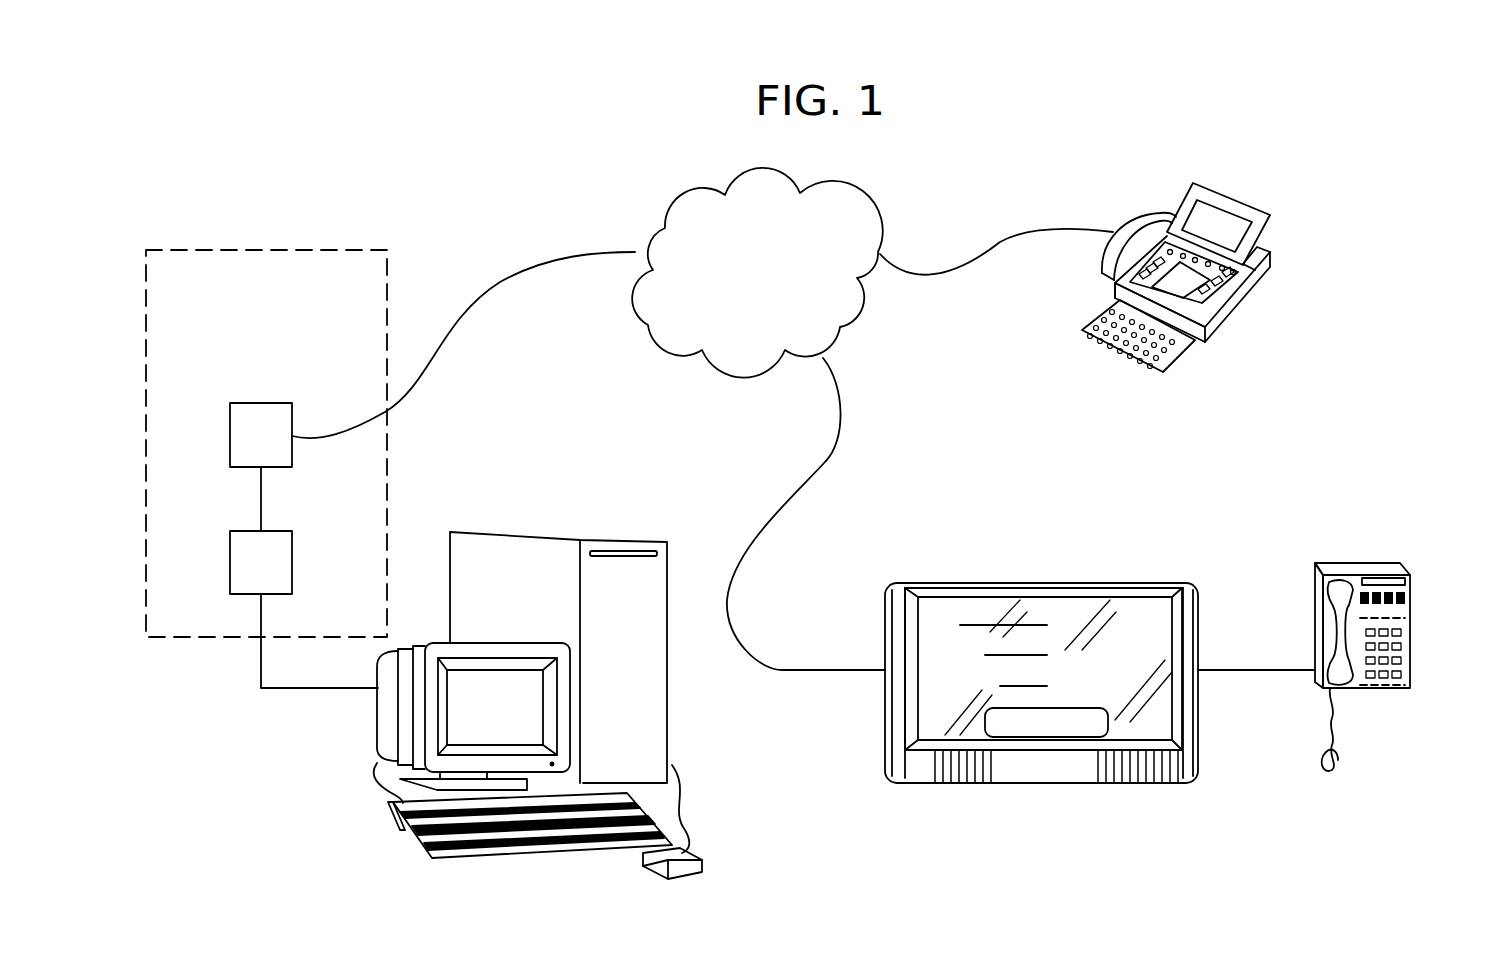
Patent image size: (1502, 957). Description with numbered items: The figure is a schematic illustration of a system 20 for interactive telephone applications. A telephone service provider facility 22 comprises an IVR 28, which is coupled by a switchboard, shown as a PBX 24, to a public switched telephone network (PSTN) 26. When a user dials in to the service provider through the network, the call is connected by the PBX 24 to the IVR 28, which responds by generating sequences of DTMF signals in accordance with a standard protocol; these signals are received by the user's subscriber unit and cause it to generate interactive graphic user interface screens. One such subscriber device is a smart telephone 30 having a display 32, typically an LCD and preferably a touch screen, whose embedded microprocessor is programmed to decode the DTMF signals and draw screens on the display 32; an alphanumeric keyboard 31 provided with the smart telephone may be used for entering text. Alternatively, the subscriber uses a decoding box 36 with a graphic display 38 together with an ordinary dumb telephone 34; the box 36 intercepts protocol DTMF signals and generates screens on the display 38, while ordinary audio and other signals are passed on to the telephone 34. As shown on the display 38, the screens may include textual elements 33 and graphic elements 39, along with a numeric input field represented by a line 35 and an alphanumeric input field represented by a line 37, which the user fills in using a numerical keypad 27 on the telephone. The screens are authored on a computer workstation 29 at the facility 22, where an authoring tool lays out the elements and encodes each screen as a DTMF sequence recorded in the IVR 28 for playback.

The system 20 is at (422, 161).
The telephone service provider facility 22 is at (245, 250).
The PBX 24 is at (230, 432).
The public switched telephone network (PSTN) 26 is at (708, 192).
The numerical keypad 27 is at (1388, 661).
The IVR 28 is at (230, 558).
The computer workstation 29 is at (509, 548).
The smart telephone 30 is at (1228, 313).
The alphanumeric keyboard 31 is at (1113, 352).
The display 32 is at (1247, 220).
The textual elements 33 is at (920, 645).
The dumb telephone 34 is at (1410, 625).
The line 35 is at (1038, 623).
The decoding box 36 is at (1110, 753).
The line 37 is at (1037, 684).
The graphic display 38 is at (930, 716).
The graphic elements 39 is at (1050, 735).